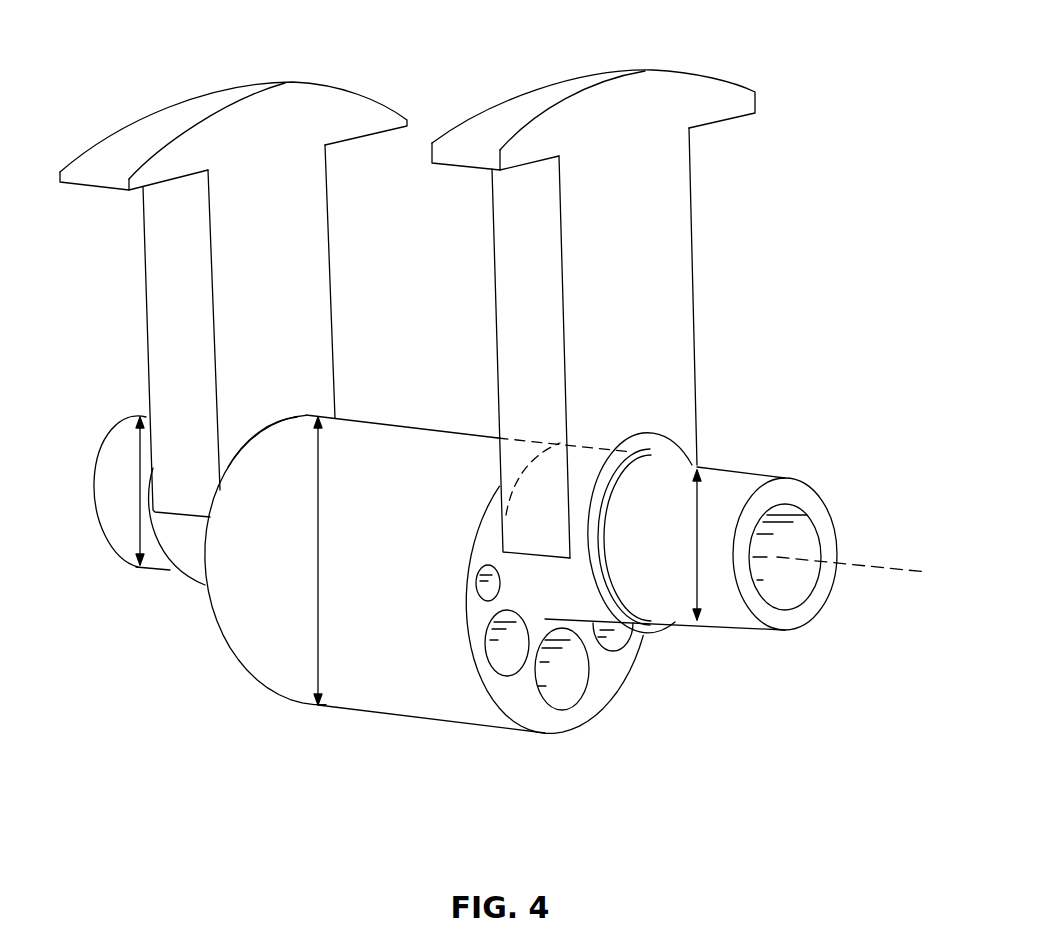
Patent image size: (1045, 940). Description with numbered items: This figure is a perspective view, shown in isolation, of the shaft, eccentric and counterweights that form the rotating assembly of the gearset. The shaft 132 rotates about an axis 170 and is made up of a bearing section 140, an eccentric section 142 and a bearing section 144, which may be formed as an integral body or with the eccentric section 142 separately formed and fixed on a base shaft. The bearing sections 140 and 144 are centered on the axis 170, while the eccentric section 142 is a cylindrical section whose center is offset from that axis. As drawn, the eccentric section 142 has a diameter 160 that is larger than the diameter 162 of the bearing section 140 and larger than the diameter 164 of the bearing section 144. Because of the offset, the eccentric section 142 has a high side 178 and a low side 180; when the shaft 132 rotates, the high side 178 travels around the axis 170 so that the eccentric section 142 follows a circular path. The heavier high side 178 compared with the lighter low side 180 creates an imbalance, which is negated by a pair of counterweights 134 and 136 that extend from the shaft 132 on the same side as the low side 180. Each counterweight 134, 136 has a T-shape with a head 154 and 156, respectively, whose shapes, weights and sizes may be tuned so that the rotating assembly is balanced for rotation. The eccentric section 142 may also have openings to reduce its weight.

The shaft 132 is at (777, 632).
The counterweight 134 is at (645, 224).
The counterweight 136 is at (293, 228).
The bearing section 140 is at (747, 472).
The eccentric section 142 is at (390, 546).
The bearing section 144 is at (115, 553).
The head 154 is at (535, 90).
The head 156 is at (178, 102).
The diameter 160 is at (318, 565).
The diameter 162 is at (690, 535).
The diameter 164 is at (140, 493).
The axis 170 is at (903, 572).
The high side 178 is at (567, 733).
The low side 180 is at (428, 430).